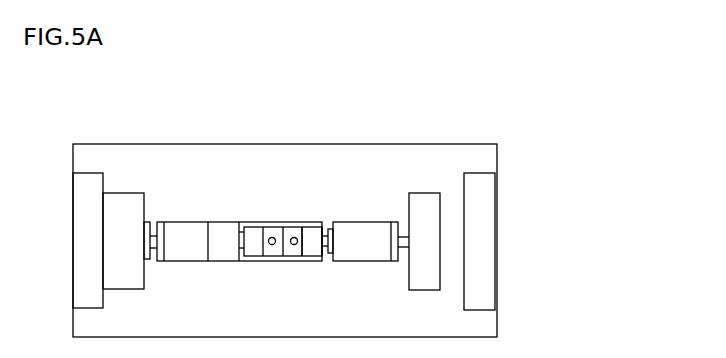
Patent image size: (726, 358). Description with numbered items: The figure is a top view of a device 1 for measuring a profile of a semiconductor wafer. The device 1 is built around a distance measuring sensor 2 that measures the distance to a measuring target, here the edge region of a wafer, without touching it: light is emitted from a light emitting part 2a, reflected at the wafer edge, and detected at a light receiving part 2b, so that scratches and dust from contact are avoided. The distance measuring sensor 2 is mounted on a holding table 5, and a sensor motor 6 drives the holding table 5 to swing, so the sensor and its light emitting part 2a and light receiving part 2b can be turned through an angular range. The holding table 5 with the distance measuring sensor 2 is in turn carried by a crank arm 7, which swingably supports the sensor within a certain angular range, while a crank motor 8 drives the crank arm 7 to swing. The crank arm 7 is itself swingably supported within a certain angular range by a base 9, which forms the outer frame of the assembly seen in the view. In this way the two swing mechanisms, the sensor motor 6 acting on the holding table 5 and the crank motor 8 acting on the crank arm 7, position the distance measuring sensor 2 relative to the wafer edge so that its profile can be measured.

The device for measuring a profile 1 is at (453, 137).
The distance measuring sensor 2 is at (289, 165).
The light emitting part 2a is at (295, 226).
The light receiving part 2b is at (273, 226).
The holding table 5 is at (312, 226).
The sensor motor 6 is at (331, 229).
The crank arm 7 is at (373, 222).
The crank motor 8 is at (148, 217).
The base 9 is at (495, 322).